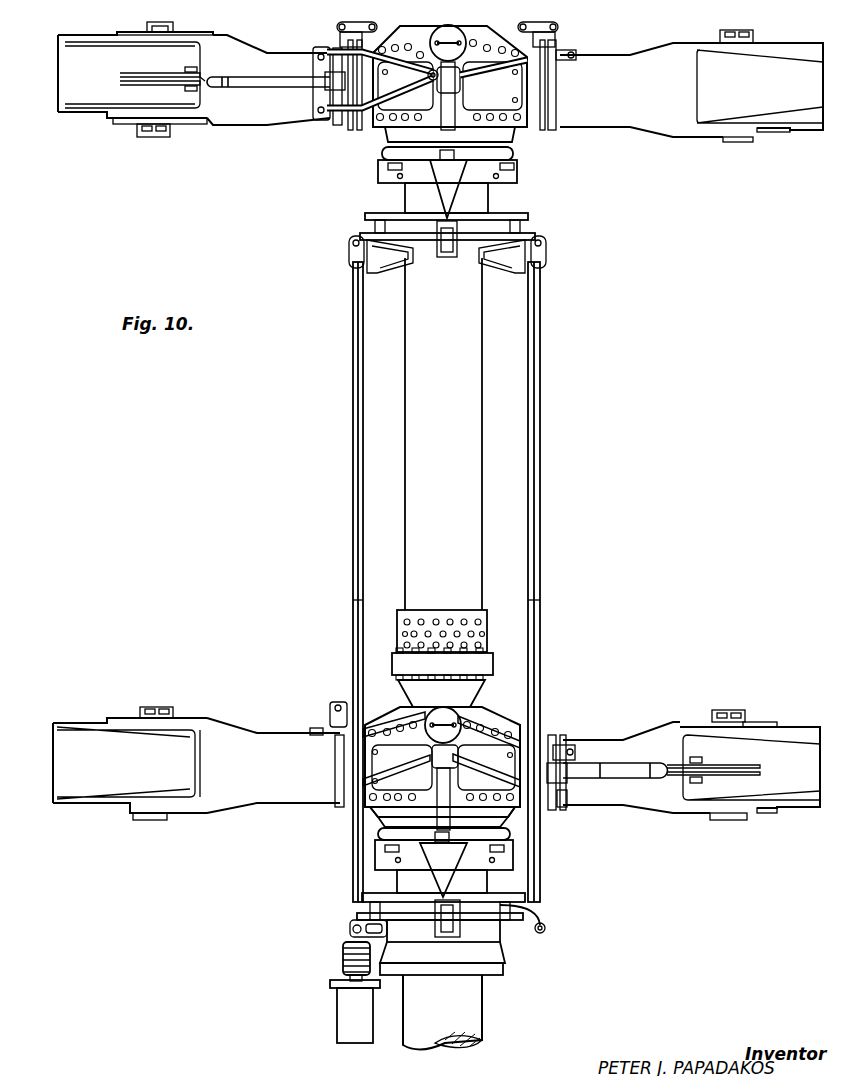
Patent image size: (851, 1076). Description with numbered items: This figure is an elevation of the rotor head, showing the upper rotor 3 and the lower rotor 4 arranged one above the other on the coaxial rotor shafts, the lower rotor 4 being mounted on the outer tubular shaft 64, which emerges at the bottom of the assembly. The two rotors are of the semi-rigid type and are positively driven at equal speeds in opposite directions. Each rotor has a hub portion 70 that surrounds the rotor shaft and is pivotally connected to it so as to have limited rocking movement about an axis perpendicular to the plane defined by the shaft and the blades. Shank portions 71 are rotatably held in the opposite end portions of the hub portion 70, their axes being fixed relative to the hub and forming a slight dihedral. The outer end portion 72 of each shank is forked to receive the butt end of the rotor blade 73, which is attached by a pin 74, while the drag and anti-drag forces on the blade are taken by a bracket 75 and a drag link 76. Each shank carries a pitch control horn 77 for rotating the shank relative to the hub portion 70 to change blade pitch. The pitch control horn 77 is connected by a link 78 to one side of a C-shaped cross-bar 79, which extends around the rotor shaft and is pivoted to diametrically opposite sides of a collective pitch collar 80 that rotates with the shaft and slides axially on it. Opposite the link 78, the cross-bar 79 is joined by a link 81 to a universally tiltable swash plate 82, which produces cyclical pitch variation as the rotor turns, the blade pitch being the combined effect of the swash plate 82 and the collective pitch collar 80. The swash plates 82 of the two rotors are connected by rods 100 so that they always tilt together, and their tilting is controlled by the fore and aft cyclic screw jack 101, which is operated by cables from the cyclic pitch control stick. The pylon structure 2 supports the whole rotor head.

The pylon mast 2 is at (545, 430).
The upper rotor 3 is at (95, 122).
The lower rotor 4 is at (90, 714).
The outer tubular shaft 64 is at (481, 1008).
The hub portion 70 is at (493, 713).
The shank portion 71 is at (588, 738).
The outer end portion 72 is at (127, 33).
The rotor blade 73 is at (70, 114).
The pin 74 is at (165, 28).
The bracket 75 is at (142, 86).
The drag link 76 is at (283, 90).
The pitch control horn 77 is at (345, 118).
The link 78 is at (378, 810).
The C-shaped cross-bar 79 is at (380, 835).
The collective pitch collar 80 is at (378, 860).
The link 81 is at (400, 885).
The swash plate 82 is at (502, 940).
The rods 100 is at (354, 620).
The fore and aft cyclic screw jack 101 is at (345, 958).